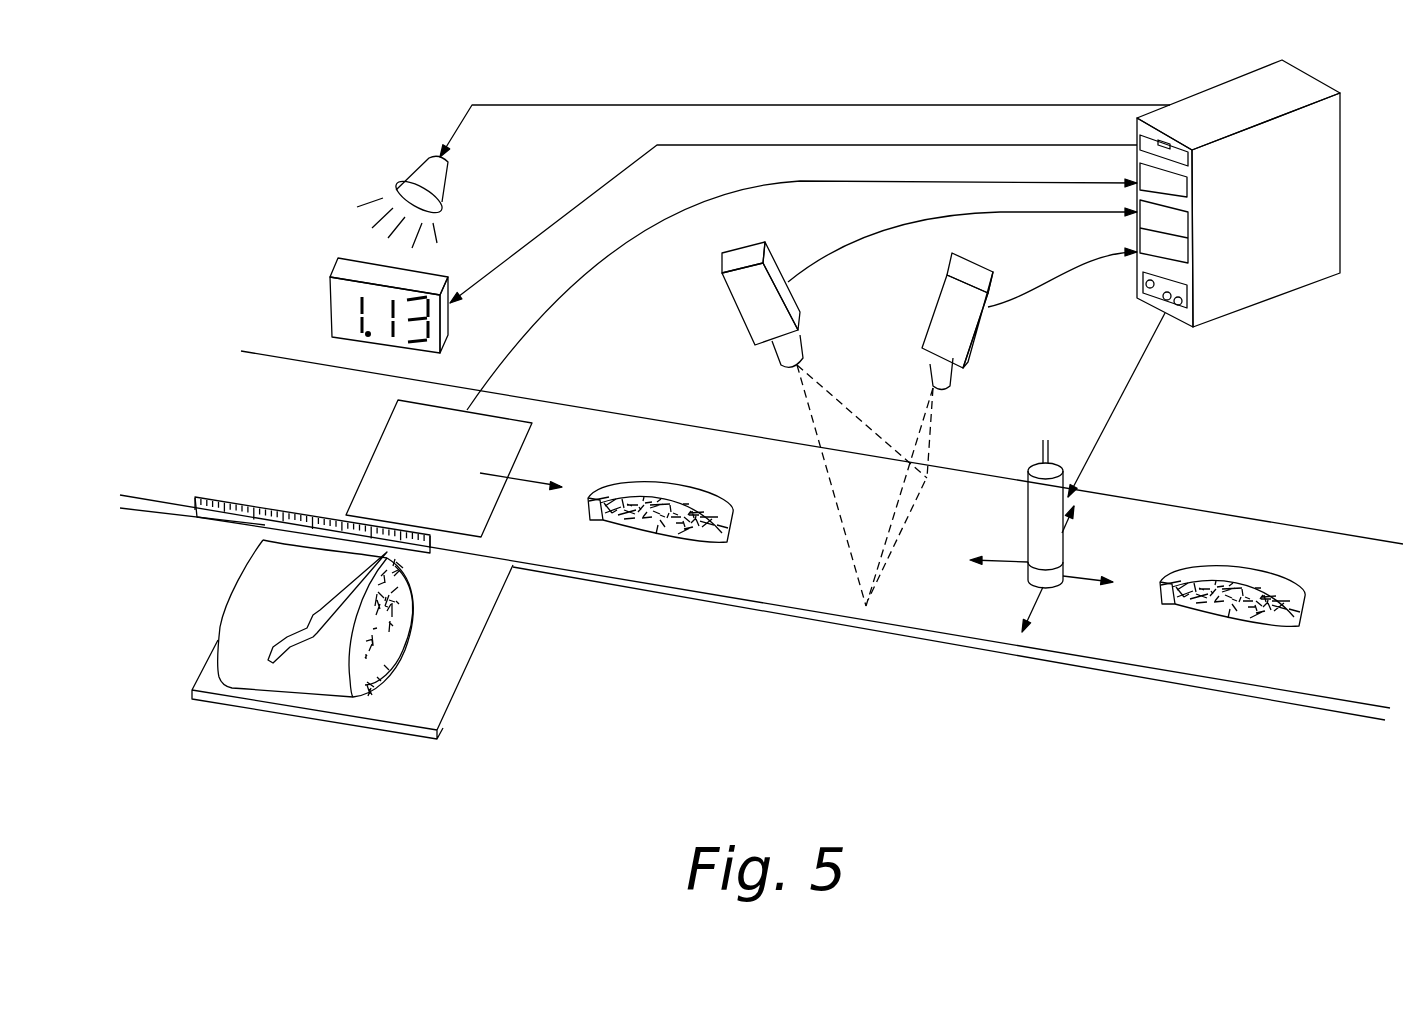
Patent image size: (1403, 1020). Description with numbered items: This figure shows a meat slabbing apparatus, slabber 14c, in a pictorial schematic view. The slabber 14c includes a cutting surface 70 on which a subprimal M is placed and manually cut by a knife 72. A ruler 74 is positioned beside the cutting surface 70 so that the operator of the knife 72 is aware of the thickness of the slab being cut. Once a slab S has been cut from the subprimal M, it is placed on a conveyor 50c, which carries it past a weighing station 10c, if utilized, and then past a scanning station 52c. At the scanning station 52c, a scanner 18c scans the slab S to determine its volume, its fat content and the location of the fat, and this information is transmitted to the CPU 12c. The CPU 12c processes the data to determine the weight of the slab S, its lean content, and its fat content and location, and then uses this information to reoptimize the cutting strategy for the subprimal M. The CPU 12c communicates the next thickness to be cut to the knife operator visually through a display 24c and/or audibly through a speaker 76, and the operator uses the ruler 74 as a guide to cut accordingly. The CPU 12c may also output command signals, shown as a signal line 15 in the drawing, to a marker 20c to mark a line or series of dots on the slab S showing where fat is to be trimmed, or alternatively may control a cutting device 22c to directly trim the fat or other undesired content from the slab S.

The weighing station 10c is at (497, 428).
The CPU 12c is at (1260, 298).
The slabber 14c is at (333, 622).
The control signal line 15 is at (1119, 399).
The scanner 18c is at (750, 309).
The marker 20c is at (972, 571).
The cutting device 22c is at (1030, 540).
The display 24c is at (332, 305).
The conveyor 50c is at (1192, 656).
The scanning station 52c is at (847, 572).
The cutting surface 70 is at (218, 690).
The knife 72 is at (295, 645).
The ruler 74 is at (203, 517).
The speaker 76 is at (408, 165).
The slab S is at (633, 528).
The subprimal M is at (393, 640).